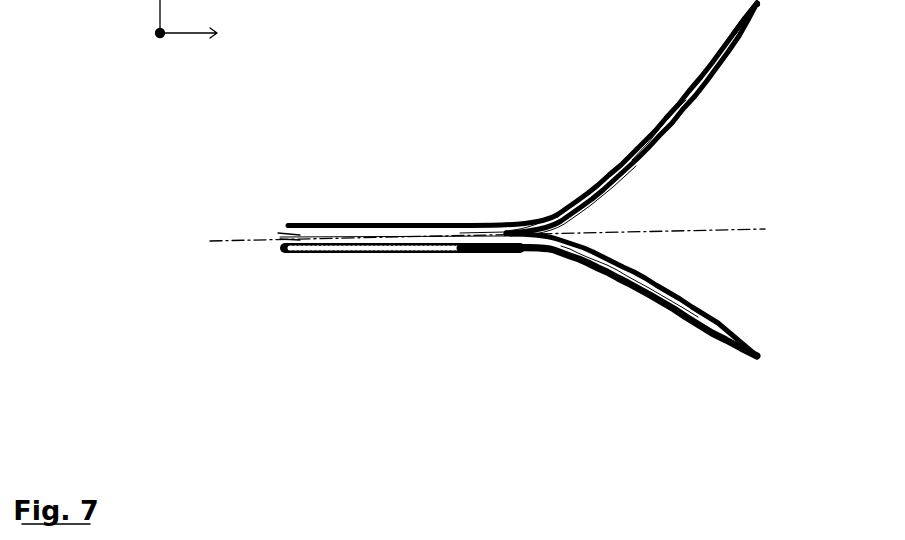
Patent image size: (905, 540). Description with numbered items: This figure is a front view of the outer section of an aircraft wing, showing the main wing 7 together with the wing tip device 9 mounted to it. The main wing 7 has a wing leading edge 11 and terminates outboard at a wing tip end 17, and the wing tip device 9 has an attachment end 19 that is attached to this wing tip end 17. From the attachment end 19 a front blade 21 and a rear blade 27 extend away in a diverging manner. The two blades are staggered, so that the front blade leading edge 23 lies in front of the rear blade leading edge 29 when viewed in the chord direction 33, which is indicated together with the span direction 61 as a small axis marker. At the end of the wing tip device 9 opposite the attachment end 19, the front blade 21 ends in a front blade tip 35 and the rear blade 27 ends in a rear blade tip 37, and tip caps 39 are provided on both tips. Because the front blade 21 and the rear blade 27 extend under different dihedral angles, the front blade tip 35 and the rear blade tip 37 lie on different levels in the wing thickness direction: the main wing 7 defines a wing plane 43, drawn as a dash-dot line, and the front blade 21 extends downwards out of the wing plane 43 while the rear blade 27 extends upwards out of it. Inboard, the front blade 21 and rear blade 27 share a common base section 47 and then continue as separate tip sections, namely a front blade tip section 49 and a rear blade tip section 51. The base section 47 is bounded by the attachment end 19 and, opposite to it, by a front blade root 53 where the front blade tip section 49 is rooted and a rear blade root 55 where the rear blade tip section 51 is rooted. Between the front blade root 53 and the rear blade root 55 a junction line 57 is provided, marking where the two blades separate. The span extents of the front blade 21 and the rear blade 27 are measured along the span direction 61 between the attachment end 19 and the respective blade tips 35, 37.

The main wing 7 is at (319, 232).
The wing tip device 9 is at (569, 162).
The wing leading edge 11 is at (352, 253).
The wing tip end 17 is at (440, 252).
The attachment end 19 is at (453, 237).
The front blade 21 is at (610, 275).
The front blade leading edge 23 is at (648, 287).
The rear blade 27 is at (595, 190).
The rear blade leading edge 29 is at (612, 172).
The chord direction 33 is at (148, 29).
The front blade tip 35 is at (745, 340).
The rear blade tip 37 is at (750, 25).
The tip caps 39 is at (758, 12).
The wing plane 43 is at (747, 229).
The base section 47 is at (490, 233).
The front blade tip section 49 is at (677, 302).
The rear blade tip section 51 is at (662, 122).
The front blade root 53 is at (537, 252).
The rear blade root 55 is at (528, 226).
The junction line 57 is at (545, 228).
The span direction 61 is at (201, 33).